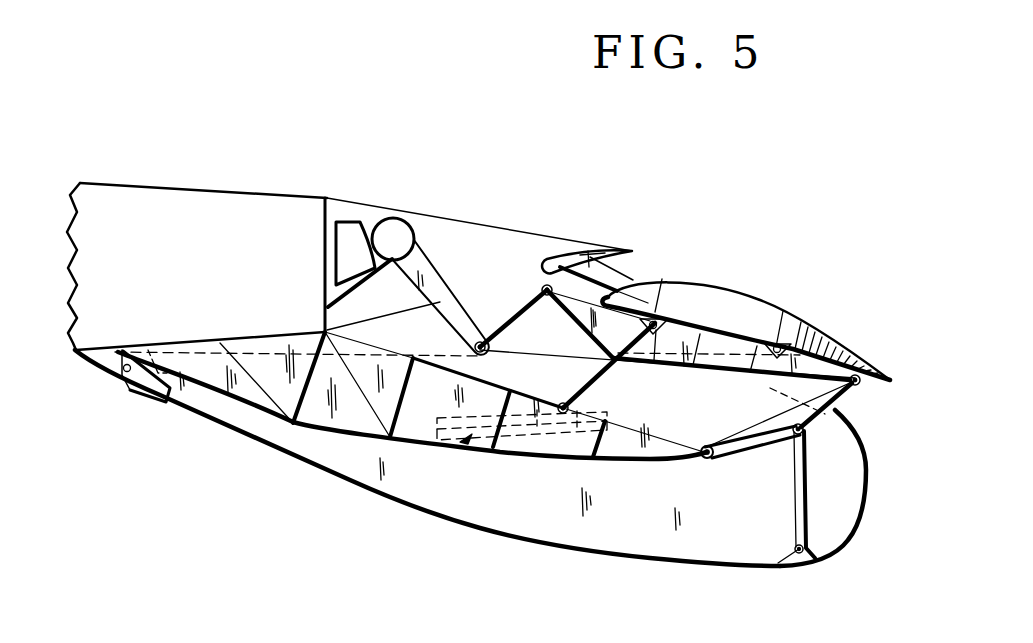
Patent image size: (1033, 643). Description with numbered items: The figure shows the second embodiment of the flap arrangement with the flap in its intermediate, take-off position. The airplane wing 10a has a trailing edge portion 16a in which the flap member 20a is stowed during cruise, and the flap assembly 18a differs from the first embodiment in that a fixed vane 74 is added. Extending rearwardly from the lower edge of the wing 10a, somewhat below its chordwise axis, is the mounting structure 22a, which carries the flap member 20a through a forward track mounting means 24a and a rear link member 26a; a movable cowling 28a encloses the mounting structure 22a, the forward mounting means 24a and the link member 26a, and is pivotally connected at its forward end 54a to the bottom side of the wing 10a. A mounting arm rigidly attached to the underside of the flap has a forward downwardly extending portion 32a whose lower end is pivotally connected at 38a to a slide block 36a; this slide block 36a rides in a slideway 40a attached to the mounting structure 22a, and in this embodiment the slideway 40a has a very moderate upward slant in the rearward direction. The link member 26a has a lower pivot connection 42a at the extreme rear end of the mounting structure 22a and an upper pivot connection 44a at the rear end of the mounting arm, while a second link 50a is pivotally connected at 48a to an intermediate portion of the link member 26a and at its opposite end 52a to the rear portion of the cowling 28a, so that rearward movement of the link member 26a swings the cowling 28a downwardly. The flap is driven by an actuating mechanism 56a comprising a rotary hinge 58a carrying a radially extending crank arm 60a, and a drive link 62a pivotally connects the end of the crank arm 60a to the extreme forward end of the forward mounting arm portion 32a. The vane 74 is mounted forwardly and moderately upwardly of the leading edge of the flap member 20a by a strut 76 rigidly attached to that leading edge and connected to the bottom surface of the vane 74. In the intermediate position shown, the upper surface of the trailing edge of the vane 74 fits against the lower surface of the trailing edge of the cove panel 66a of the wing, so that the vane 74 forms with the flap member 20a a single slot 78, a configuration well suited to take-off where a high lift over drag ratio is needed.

The wing 10a is at (283, 208).
The trailing edge portion 16a is at (493, 228).
The flap assembly 18a is at (866, 429).
The flap member 20a is at (713, 300).
The mounting structure 22a is at (352, 436).
The forward track mounting means 24a is at (467, 440).
The link member 26a is at (757, 437).
The movable cowling 28a is at (572, 543).
The forward downwardly extending portion 32a is at (640, 374).
The slide block 36a is at (587, 430).
The pivot connection 38a is at (561, 403).
The slideway 40a is at (530, 443).
The lower pivot connection 42a is at (707, 459).
The upper pivot connection 44a is at (861, 386).
The pivot connection 48a is at (803, 431).
The second link 50a is at (794, 514).
The pivot connection 52a is at (800, 553).
The pivot connection 54a is at (122, 371).
The actuating mechanism 56a is at (318, 246).
The rotary hinge 58a is at (403, 223).
The crank arm 60a is at (427, 282).
The drive link 62a is at (513, 316).
The cove panel 66a is at (553, 235).
The fixed vane 74 is at (587, 252).
The strut 76 is at (627, 282).
The single slot 78 is at (633, 262).